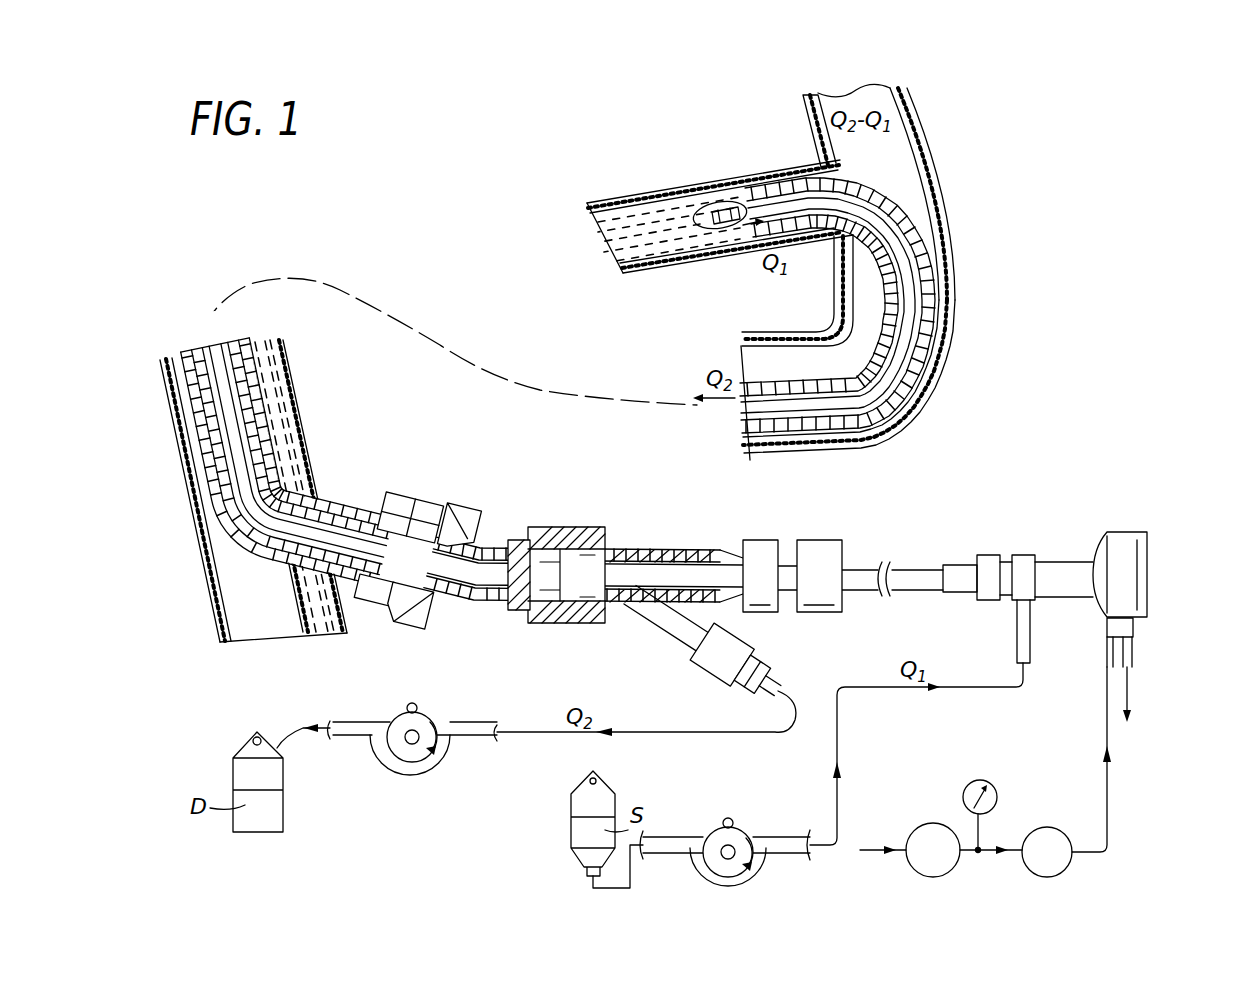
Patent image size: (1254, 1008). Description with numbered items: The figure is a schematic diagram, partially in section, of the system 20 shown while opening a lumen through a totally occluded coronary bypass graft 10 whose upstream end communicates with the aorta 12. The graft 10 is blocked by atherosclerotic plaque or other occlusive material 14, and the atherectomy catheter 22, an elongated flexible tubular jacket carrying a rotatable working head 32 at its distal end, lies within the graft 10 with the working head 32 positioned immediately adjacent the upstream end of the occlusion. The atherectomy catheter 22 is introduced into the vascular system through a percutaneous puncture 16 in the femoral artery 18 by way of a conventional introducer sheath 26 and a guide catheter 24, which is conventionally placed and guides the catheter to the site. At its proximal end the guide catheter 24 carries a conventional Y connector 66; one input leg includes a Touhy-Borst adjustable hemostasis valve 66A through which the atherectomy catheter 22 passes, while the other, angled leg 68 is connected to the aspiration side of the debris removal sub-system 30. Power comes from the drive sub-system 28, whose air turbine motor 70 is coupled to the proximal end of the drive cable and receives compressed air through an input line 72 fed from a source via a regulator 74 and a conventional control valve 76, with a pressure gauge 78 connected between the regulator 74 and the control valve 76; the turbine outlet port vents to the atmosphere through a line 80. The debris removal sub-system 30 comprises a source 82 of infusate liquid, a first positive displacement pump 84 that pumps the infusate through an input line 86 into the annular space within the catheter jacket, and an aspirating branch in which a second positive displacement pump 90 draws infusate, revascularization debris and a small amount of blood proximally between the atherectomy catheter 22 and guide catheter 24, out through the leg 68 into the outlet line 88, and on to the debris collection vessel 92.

The coronary bypass graft 10 is at (622, 200).
The aorta 12 is at (932, 165).
The occlusive material 14 is at (682, 240).
The percutaneous puncture 16 is at (312, 472).
The femoral artery 18 is at (292, 397).
The system 20 is at (776, 520).
The atherectomy catheter 22 is at (775, 188).
The guide catheter 24 is at (912, 233).
The introducer sheath 26 is at (380, 496).
The drive sub-system 28 is at (1091, 765).
The debris removal sub-system 30 is at (688, 789).
The working head 32 is at (720, 203).
The Y connector 66 is at (667, 544).
The Touhy-Borst adjustable hemostasis valve 66A is at (588, 527).
The angled leg 68 is at (633, 618).
The air turbine motor 70 is at (1130, 566).
The input line 72 is at (1107, 652).
The regulator 74 is at (940, 872).
The control valve 76 is at (1062, 862).
The pressure gauge 78 is at (980, 780).
The line 80 is at (1134, 652).
The source of infusate liquid 82 is at (572, 822).
The first positive displacement pump 84 is at (741, 834).
The input line 86 is at (1017, 640).
The outlet line 88 is at (765, 675).
The second positive displacement pump 90 is at (423, 716).
The debris collection vessel 92 is at (233, 770).